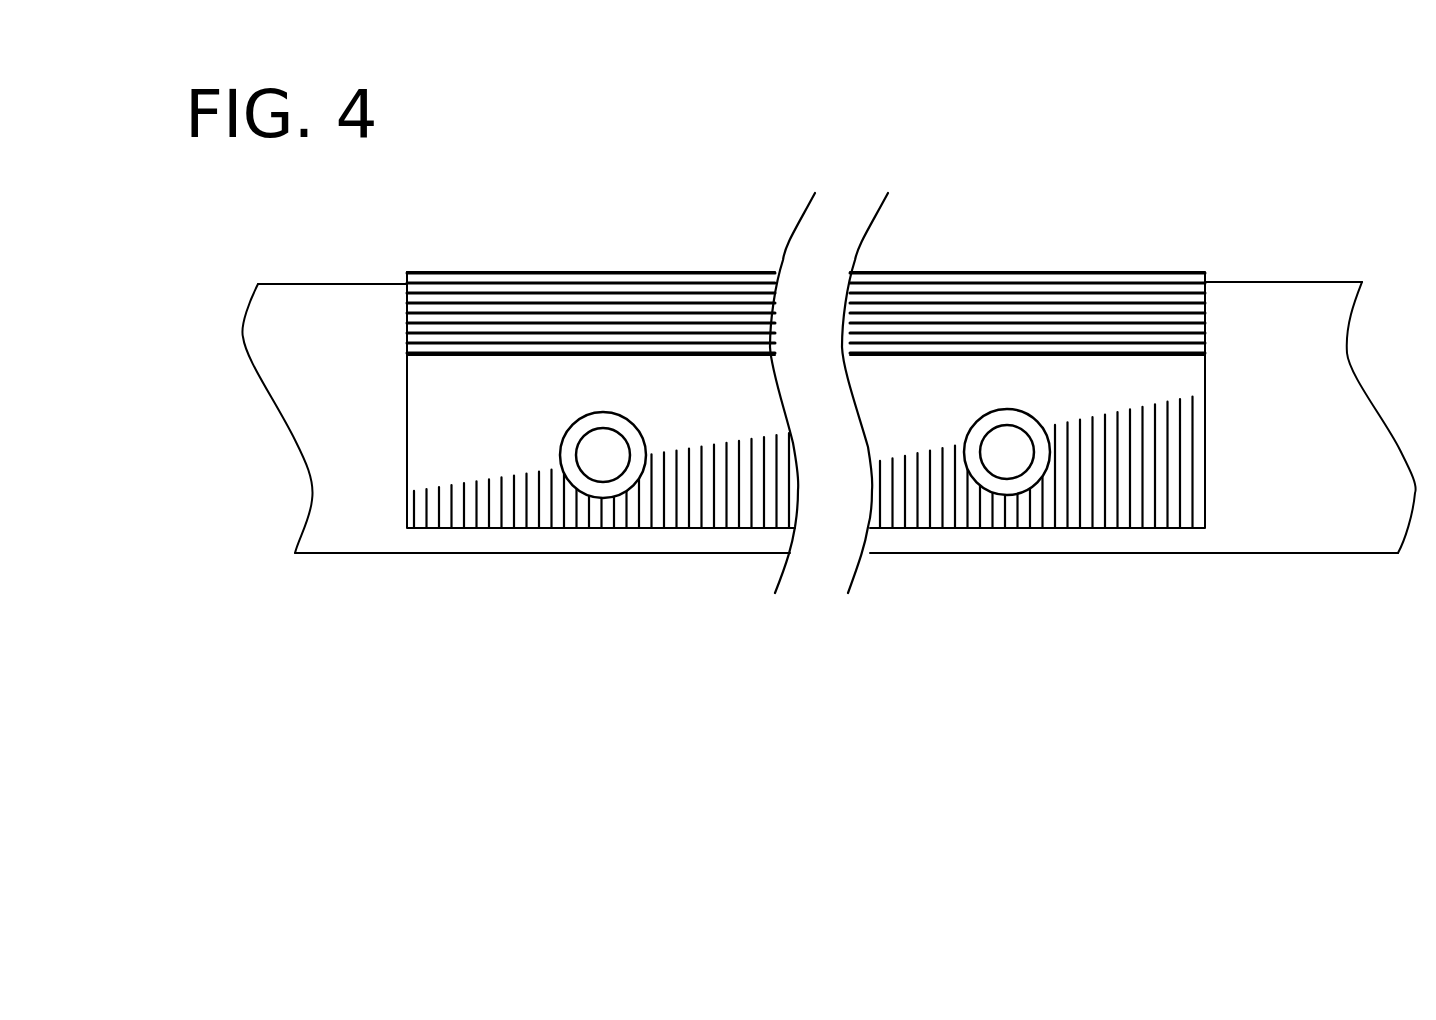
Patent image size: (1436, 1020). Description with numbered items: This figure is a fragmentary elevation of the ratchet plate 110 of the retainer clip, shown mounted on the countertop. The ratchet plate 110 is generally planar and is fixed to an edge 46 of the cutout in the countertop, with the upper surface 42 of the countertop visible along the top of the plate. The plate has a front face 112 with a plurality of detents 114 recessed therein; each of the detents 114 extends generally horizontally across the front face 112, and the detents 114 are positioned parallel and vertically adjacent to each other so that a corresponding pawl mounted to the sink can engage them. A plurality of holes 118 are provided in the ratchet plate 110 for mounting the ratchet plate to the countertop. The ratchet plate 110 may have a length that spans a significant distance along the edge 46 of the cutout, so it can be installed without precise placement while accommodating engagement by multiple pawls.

The upper surface 42 is at (333, 282).
The edge 46 is at (307, 432).
The ratchet plate 110 is at (728, 410).
The front face 112 is at (1113, 475).
The detents 114 is at (475, 273).
The holes 118 is at (602, 458).